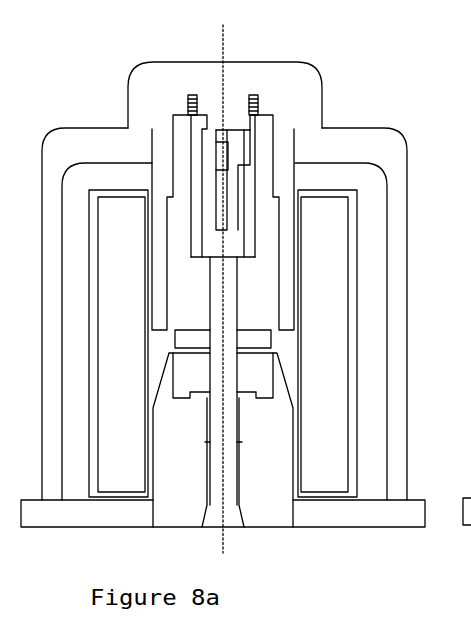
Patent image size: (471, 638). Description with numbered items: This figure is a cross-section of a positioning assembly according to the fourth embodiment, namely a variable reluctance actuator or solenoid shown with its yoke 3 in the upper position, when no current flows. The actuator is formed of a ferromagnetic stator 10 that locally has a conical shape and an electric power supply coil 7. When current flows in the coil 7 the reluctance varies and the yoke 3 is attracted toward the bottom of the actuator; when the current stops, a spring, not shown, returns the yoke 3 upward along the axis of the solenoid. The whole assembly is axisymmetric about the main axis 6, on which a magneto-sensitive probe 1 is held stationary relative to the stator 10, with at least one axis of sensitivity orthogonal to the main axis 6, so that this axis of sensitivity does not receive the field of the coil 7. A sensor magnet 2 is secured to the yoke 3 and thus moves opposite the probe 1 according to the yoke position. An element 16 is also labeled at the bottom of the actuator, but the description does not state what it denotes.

The main axis 6 is at (234, 47).
The sensor magnet 2 is at (259, 172).
The magneto-sensitive probe 1 is at (239, 200).
The yoke 3 is at (264, 312).
The electric power supply coil 7 is at (330, 363).
The ferromagnetic stator 10 is at (280, 435).
The outlet nozzle 16 is at (247, 523).